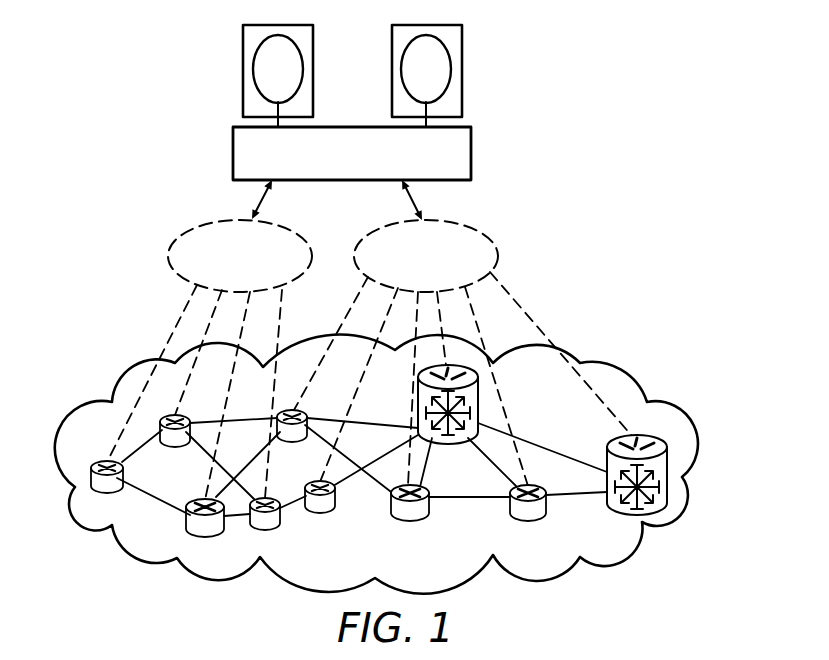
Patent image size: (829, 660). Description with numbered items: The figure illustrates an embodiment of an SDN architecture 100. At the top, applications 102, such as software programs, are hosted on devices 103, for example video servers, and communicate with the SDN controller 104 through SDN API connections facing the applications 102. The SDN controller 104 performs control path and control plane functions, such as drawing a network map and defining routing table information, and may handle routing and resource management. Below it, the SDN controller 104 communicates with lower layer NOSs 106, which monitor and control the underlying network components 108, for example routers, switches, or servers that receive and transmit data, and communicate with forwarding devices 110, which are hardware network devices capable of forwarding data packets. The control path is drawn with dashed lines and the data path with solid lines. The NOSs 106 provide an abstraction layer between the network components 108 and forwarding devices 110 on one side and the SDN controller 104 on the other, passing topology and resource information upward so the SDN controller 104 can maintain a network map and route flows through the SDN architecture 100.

The SDN architecture 100 is at (104, 56).
The application 102 is at (292, 37).
The device 103 is at (314, 70).
The SDN controller 104 is at (472, 152).
The NOS 106 is at (166, 258).
The network component 108 is at (291, 405).
The forwarding device 110 is at (479, 405).